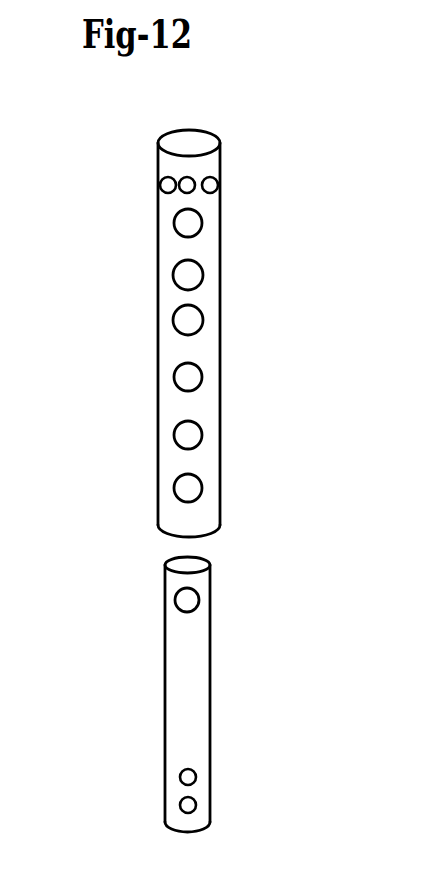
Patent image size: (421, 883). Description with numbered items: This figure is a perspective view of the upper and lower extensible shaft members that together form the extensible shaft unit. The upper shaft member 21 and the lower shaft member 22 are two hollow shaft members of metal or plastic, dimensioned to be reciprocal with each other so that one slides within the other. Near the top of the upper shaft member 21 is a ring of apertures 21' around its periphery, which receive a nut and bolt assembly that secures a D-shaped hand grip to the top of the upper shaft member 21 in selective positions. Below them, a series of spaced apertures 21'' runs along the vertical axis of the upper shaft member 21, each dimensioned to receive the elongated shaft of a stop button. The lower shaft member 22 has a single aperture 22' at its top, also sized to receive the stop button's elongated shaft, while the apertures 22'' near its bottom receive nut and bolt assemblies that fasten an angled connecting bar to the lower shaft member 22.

The upper shaft member 21 is at (133, 333).
The apertures around the periphery of the upper shaft member 21' is at (131, 168).
The spaced apertures along the vertical axis of the upper shaft member 21'' is at (257, 355).
The lower shaft member 22 is at (223, 694).
The aperture at the top of the lower shaft member 22' is at (246, 569).
The apertures on the lower shaft member 22'' is at (252, 798).